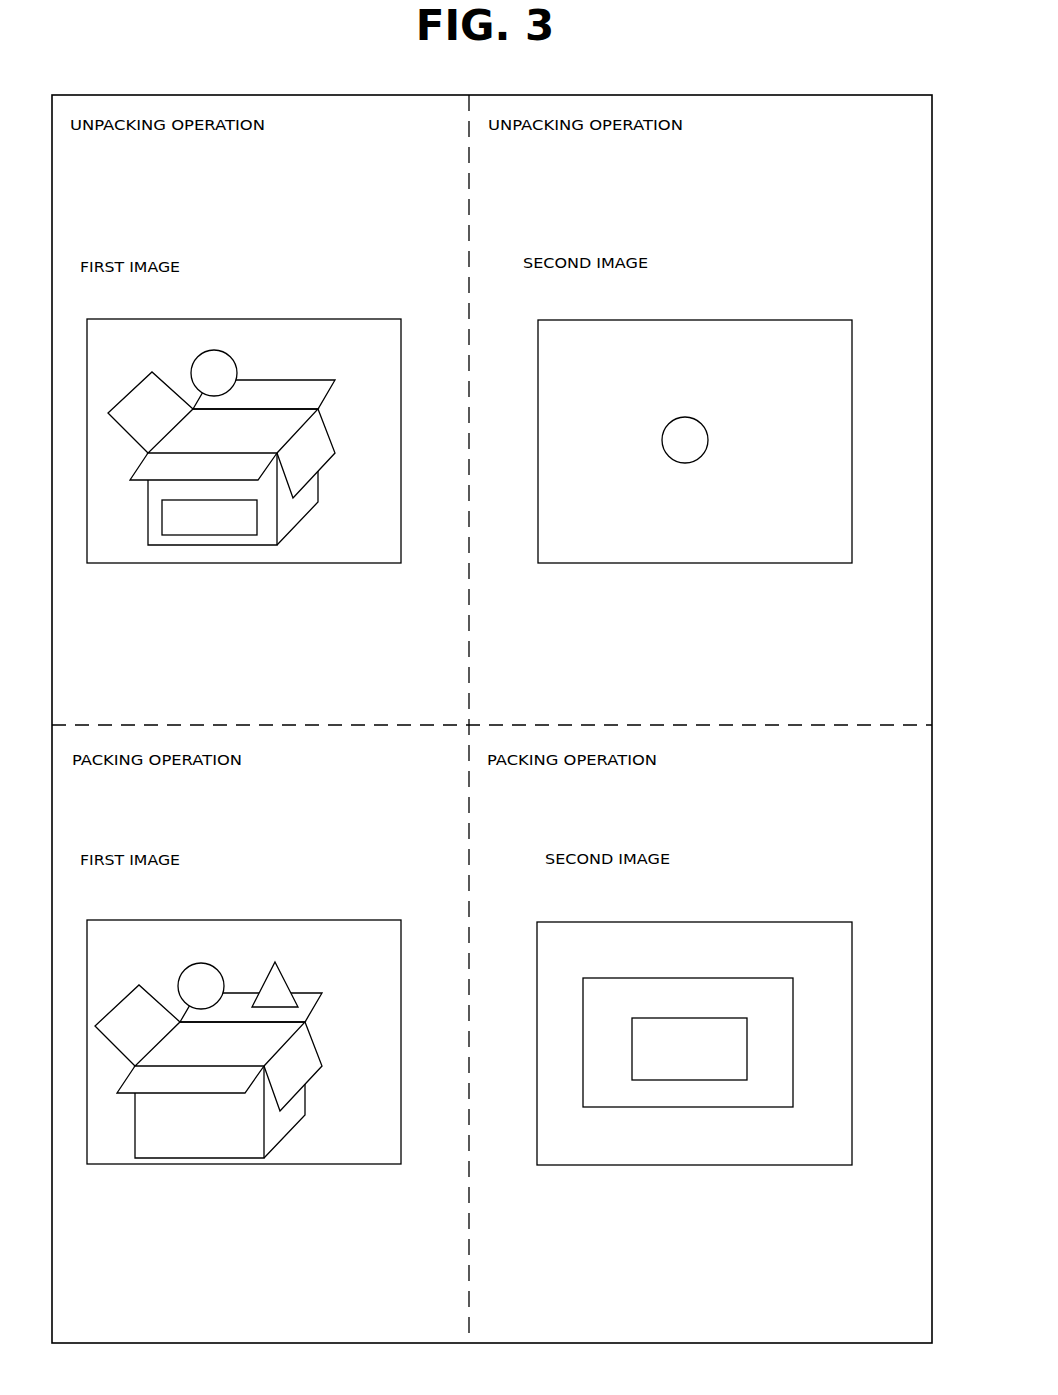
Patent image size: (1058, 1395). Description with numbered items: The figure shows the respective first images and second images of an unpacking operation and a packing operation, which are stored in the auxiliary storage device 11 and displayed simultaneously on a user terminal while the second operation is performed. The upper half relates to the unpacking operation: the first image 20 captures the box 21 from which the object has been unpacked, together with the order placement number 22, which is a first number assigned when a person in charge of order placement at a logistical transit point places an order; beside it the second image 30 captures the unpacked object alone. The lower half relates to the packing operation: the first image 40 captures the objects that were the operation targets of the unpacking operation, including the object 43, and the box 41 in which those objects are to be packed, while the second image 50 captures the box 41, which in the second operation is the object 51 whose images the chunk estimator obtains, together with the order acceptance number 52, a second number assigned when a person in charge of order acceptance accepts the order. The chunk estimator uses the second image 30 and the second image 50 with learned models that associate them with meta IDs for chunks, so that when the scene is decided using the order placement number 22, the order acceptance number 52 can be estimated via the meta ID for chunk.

The auxiliary storage device 11 is at (932, 95).
The first image of the unpacking operation 20 is at (399, 317).
The box 21 is at (338, 378).
The order placement number 22 is at (258, 502).
The second image of the unpacking operation 30 is at (850, 318).
The first image of the packing operation 40 is at (399, 918).
The box 41 is at (325, 992).
The object 43 is at (282, 970).
The second image of the packing operation 50 is at (851, 920).
The object 51 is at (793, 976).
The order acceptance number 52 is at (746, 1017).